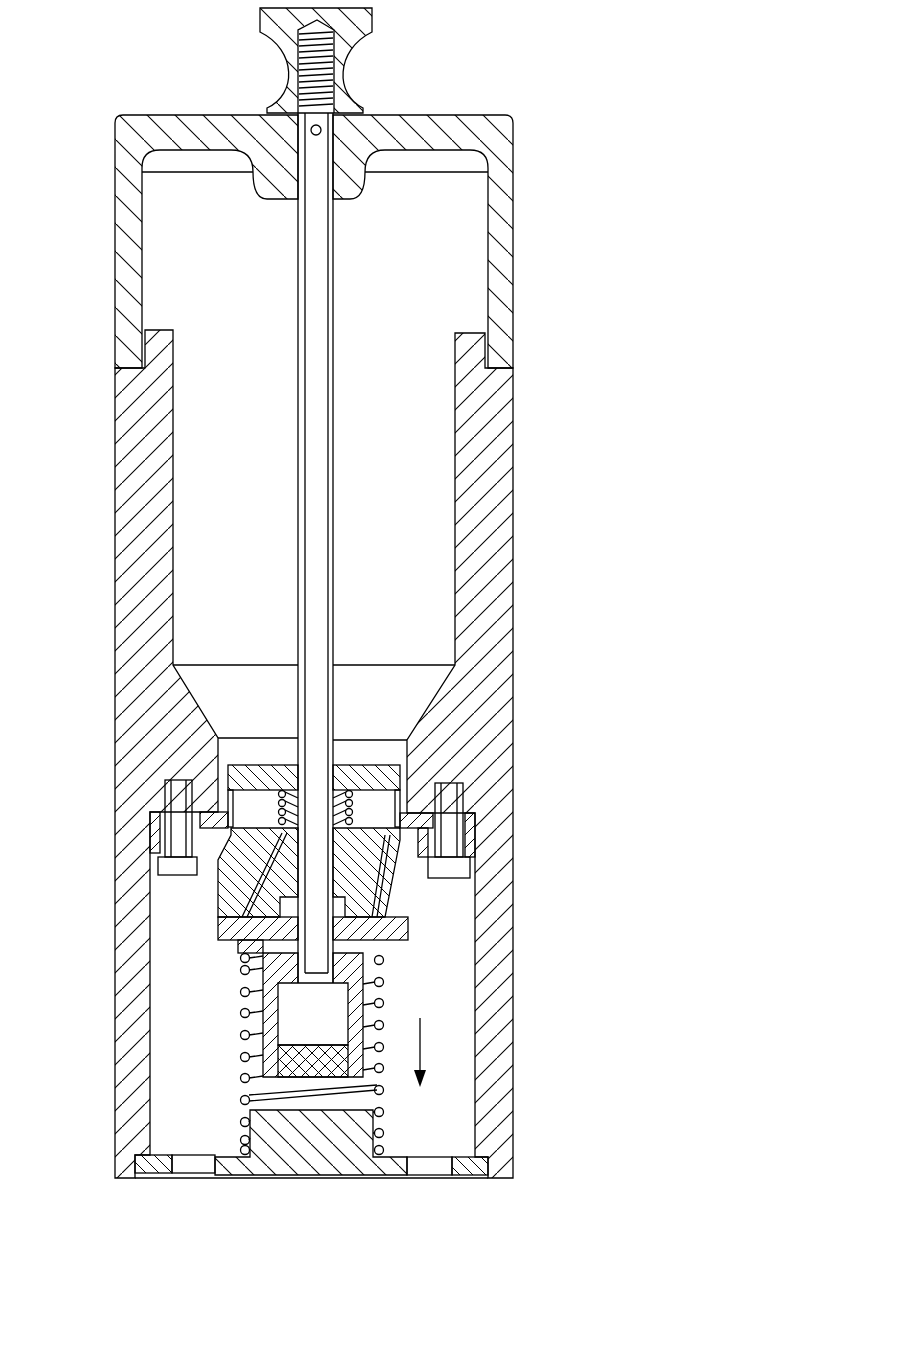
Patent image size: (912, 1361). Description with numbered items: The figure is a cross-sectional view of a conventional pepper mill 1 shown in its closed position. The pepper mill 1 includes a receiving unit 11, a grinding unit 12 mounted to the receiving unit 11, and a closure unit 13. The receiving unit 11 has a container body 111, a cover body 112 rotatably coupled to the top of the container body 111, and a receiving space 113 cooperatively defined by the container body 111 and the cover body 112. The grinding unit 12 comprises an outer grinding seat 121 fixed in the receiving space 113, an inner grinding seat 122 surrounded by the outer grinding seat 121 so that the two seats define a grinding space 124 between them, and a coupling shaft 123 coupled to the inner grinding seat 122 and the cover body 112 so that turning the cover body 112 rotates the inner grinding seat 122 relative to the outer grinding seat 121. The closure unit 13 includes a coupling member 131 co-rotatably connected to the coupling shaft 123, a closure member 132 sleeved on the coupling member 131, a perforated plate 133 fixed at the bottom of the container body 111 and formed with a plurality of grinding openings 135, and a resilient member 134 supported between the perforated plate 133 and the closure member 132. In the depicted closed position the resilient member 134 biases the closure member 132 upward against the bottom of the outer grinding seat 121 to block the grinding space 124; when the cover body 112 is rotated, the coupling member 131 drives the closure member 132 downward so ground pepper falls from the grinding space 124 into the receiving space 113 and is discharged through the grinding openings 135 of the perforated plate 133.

The pepper mill 1 is at (560, 532).
The receiving unit 11 is at (539, 405).
The container body 111 is at (497, 447).
The cover body 112 is at (500, 238).
The receiving space 113 is at (410, 357).
The grinding unit 12 is at (383, 62).
The outer grinding seat 121 is at (392, 860).
The inner grinding seat 122 is at (347, 860).
The coupling shaft 123 is at (320, 240).
The grinding space 124 is at (247, 882).
The closure unit 13 is at (207, 982).
The coupling member 131 is at (350, 930).
The closure member 132 is at (380, 945).
The perforated plate 133 is at (348, 1170).
The resilient member 134 is at (245, 1037).
The grinding openings 135 is at (183, 1167).